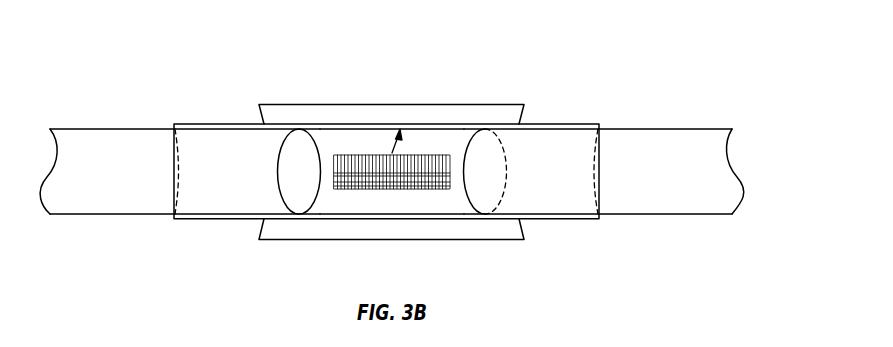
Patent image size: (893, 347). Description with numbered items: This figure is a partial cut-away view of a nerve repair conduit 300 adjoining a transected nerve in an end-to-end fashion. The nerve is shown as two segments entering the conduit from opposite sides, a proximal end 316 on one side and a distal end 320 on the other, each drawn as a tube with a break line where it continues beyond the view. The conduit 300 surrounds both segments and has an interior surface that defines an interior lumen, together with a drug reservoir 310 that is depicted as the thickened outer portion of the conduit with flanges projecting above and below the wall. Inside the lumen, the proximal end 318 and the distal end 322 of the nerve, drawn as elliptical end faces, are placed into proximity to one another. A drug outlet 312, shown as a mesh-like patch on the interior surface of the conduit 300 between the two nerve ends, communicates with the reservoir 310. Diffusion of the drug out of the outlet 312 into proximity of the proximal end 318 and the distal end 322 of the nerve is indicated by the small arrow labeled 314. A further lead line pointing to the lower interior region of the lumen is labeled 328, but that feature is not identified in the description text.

The nerve repair conduit 300 is at (391, 62).
The drug reservoir 310 is at (492, 108).
The drug outlet 312 is at (427, 163).
The diffusion of the drug 314 is at (391, 152).
The proximal end of the nerve 316 is at (107, 142).
The proximal end of the nerve 318 is at (295, 198).
The distal end of the nerve 320 is at (672, 140).
The distal end of the nerve 322 is at (484, 199).
The interior chamber 328 is at (396, 207).